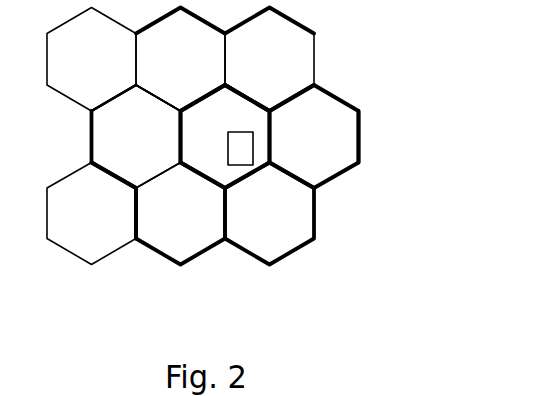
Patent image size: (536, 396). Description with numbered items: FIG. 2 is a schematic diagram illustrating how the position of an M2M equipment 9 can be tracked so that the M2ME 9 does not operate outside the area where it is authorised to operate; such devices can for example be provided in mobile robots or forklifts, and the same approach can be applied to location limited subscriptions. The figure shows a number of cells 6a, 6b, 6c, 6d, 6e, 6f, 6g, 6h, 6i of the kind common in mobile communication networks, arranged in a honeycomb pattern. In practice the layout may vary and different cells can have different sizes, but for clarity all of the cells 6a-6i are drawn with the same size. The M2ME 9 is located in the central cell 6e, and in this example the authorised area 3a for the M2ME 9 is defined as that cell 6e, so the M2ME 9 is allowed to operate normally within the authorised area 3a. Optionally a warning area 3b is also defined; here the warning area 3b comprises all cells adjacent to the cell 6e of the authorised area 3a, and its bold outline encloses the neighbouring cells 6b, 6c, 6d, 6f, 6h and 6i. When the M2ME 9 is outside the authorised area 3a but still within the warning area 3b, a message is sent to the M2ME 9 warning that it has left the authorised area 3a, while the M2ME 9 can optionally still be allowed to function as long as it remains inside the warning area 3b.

The cell 6a is at (107, 50).
The cell 6b is at (198, 50).
The cell 6c is at (287, 50).
The cell 6d is at (153, 122).
The cell 6e is at (242, 122).
The cell 6f is at (328, 122).
The cell 6g is at (108, 200).
The cell 6h is at (198, 200).
The cell 6i is at (284, 200).
The M2M equipment 9 is at (248, 161).
The authorised area 3a is at (247, 94).
The warning area 3b is at (358, 135).